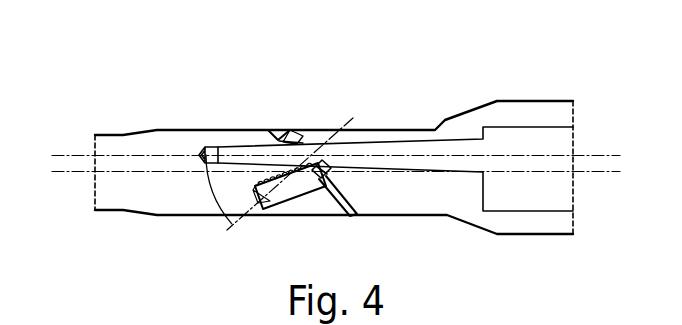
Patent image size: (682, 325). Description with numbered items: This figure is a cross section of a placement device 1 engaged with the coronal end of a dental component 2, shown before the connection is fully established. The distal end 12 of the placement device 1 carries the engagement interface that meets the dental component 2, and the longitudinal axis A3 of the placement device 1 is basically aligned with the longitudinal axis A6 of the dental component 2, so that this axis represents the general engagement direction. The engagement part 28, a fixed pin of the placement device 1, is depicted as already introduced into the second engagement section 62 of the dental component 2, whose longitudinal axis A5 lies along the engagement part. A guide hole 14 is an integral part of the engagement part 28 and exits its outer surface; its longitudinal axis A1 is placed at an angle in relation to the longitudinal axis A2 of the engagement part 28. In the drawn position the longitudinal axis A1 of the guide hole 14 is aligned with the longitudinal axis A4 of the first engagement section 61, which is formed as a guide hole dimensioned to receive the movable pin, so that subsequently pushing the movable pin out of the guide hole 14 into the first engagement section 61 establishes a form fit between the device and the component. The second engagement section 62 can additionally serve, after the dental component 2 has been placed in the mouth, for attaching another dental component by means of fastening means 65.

The placement device 1 is at (334, 150).
The dental component 2 is at (153, 122).
The distal end of placement device 12 is at (393, 124).
The guide hole 14 is at (306, 142).
The engagement part 28 is at (281, 204).
The first engagement section 61 is at (213, 157).
The second engagement section 62 is at (327, 175).
The fastening means 65 is at (302, 193).
The longitudinal axis of guide hole A1 is at (603, 156).
The longitudinal axis of engagement part A2 is at (343, 120).
The longitudinal axis of placement device A3 is at (603, 172).
The longitudinal axis of first engagement section A4 is at (72, 153).
The longitudinal axis of second engagement section A5 is at (256, 204).
The longitudinal axis of dental component A6 is at (72, 172).